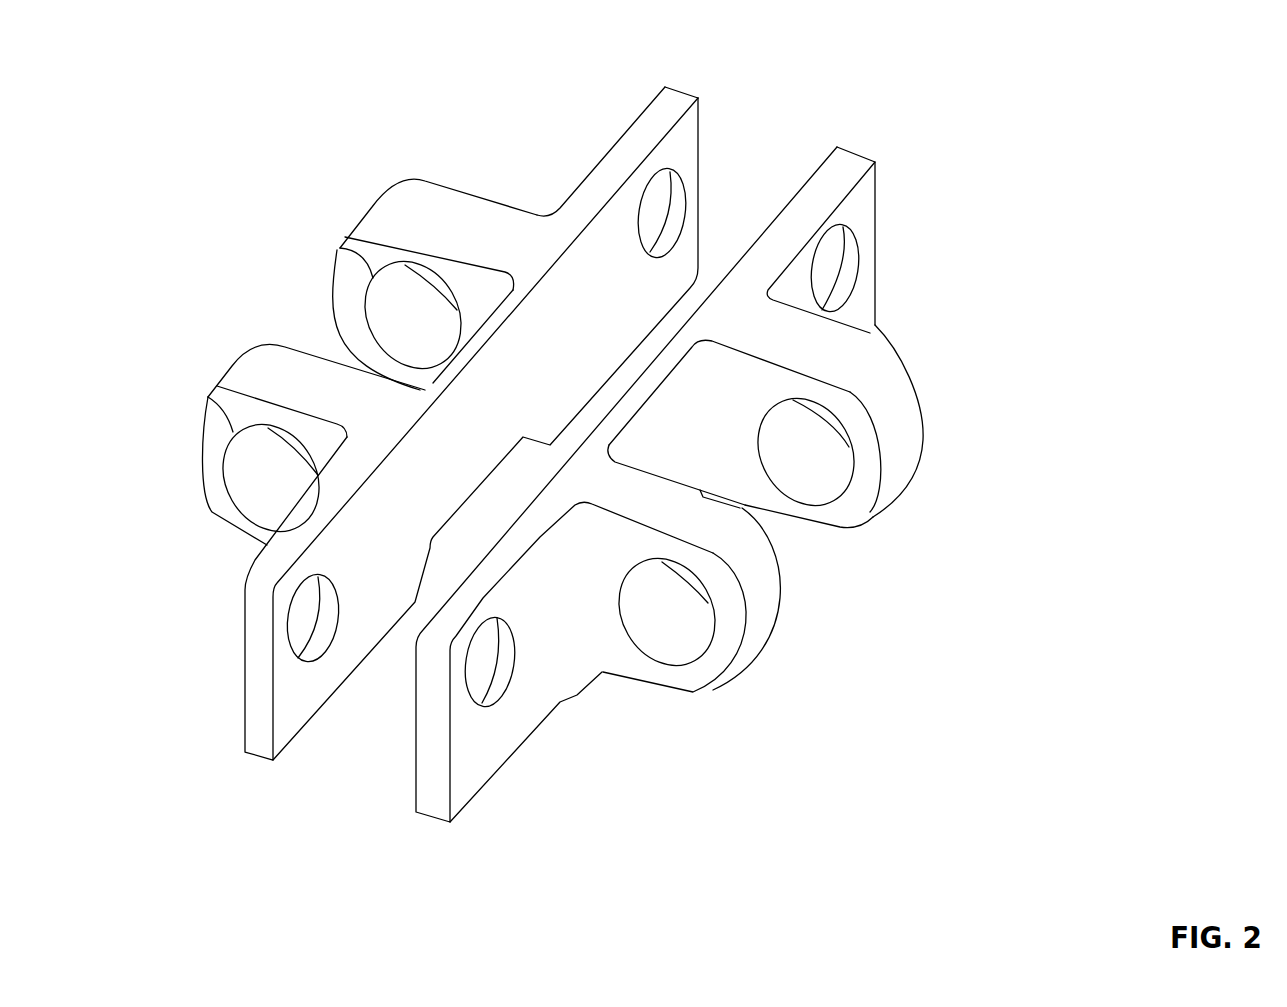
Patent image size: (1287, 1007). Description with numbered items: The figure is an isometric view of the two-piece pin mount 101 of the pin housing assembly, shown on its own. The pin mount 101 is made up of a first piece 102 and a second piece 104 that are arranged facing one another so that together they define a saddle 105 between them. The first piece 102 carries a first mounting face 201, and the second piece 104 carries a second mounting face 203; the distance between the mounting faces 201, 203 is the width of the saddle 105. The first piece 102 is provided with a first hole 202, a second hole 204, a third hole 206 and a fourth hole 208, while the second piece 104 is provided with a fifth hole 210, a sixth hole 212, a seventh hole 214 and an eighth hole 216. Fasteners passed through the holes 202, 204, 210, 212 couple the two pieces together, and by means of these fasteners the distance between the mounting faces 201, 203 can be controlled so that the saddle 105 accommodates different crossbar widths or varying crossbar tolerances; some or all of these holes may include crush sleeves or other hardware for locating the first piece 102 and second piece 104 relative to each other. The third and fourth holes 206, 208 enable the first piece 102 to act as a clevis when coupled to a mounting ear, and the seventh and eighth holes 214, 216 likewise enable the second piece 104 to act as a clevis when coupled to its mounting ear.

The pin mount 101 is at (976, 63).
The first piece 102 is at (853, 148).
The second piece 104 is at (680, 90).
The saddle 105 is at (770, 117).
The first mounting face 201 is at (778, 217).
The first opening or hole 202 is at (850, 227).
The second mounting face 203 is at (557, 307).
The second opening or hole 204 is at (500, 617).
The third opening or hole 206 is at (705, 593).
The fourth opening or hole 208 is at (838, 437).
The fifth opening or hole 210 is at (317, 573).
The sixth opening or hole 212 is at (670, 173).
The seventh opening or hole 214 is at (208, 398).
The eighth opening or hole 216 is at (340, 248).